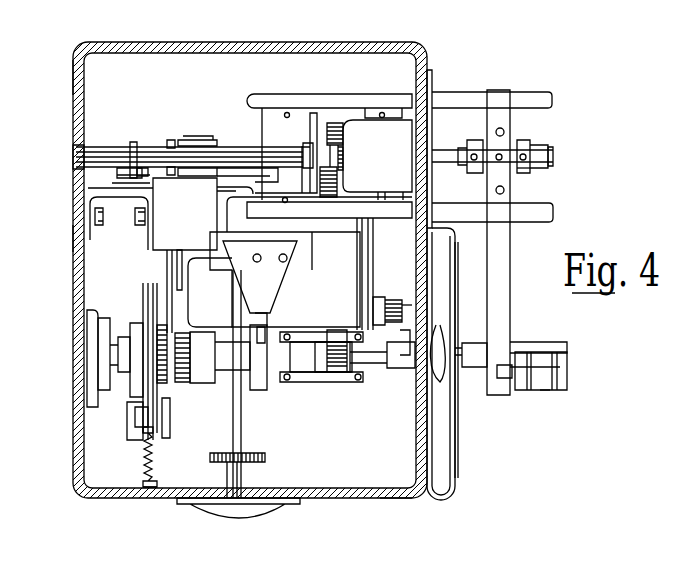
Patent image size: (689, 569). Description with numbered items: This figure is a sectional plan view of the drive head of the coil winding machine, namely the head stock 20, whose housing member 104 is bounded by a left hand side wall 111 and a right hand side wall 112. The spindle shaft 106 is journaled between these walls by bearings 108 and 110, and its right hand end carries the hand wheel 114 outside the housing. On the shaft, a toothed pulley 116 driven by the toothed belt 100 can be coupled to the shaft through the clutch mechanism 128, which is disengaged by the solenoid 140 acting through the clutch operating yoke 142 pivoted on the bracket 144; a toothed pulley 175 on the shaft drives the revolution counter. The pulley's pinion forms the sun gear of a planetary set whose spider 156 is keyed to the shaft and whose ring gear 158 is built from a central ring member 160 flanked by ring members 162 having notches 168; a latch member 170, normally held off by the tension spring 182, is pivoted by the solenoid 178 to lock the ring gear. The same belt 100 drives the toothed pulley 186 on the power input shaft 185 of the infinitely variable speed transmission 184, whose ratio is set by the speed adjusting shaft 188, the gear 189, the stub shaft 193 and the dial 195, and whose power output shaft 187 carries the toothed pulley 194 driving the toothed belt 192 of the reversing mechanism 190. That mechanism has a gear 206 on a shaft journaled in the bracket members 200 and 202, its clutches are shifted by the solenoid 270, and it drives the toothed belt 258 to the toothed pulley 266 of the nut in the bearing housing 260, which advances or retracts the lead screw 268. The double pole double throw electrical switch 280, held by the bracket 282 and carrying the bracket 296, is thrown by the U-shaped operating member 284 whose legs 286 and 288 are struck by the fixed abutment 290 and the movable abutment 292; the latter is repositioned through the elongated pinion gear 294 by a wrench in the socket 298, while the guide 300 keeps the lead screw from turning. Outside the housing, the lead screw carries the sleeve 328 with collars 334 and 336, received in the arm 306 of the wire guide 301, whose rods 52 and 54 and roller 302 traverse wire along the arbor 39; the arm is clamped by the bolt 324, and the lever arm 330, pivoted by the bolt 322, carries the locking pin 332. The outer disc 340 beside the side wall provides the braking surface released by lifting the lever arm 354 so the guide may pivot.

The head stock 20 is at (156, 42).
The side wall 111 is at (79, 68).
The housing member 104 is at (78, 240).
The side wall 112 is at (418, 450).
The bracket member 200 is at (247, 108).
The bracket member 202 is at (364, 110).
The reversing mechanism 190 is at (311, 131).
The bearing housing 260 is at (364, 158).
The toothed pulley 266 is at (330, 128).
The toothed belt 258 is at (342, 190).
The gear 206 is at (340, 198).
The elongated pinion gear 294 is at (110, 152).
The wrench engaging socket 298 is at (78, 157).
The leg 286 is at (127, 150).
The fixed abutment 290 is at (133, 142).
The guide 300 is at (137, 142).
The movable abutment 292 is at (191, 140).
The solenoid 270 is at (207, 138).
The leg 288 is at (282, 178).
The U-shaped operating member 284 is at (150, 170).
The bracket 282 is at (92, 200).
The double pole double throw electrical switch 280 is at (168, 226).
The bracket 296 is at (217, 188).
The infinitely variable speed transmission 184 is at (318, 273).
The bracket 144 is at (268, 292).
The notches 168 is at (210, 292).
The power input shaft 185 is at (187, 274).
The toothed pulley 186 is at (165, 270).
The toothed belt 192 is at (357, 236).
The power output shaft 187 is at (387, 300).
The toothed pulley 194 is at (405, 305).
The bearing 110 is at (405, 352).
The bearing 108 is at (94, 357).
The ring members 162 is at (130, 323).
The central ring member 160 is at (150, 378).
The spider 156 is at (136, 314).
The ring gear 158 is at (141, 283).
The toothed pulley 116 is at (177, 385).
The toothed belt 100 is at (185, 390).
The clutch mechanism 128 is at (200, 362).
The speed adjusting shaft 188 is at (243, 431).
The solenoid 178 is at (170, 430).
The latch member 170 is at (144, 443).
The tension spring 182 is at (146, 482).
The gear 189 is at (226, 460).
The stub shaft 193 is at (245, 470).
The dial 195 is at (240, 514).
The clutch operating yoke 142 is at (268, 385).
The solenoid 140 is at (338, 374).
The toothed pulley 175 is at (348, 373).
The spindle shaft 106 is at (392, 370).
The rod 52 is at (452, 98).
The rod 54 is at (545, 211).
The arm 306 is at (500, 100).
The lever arm 330 is at (510, 298).
The outer disc 340 is at (430, 82).
The bolt 324 is at (505, 132).
The locking pin 332 is at (497, 160).
The bolt 322 is at (506, 190).
The lead screw 268 is at (556, 155).
The collar 334 is at (473, 146).
The sleeve 328 is at (535, 148).
The collar 336 is at (530, 172).
The arbor 39 is at (522, 346).
The roller 302 is at (567, 370).
The wire guide 301 is at (540, 388).
The hand wheel 114 is at (450, 488).
The lever arm 354 is at (440, 376).